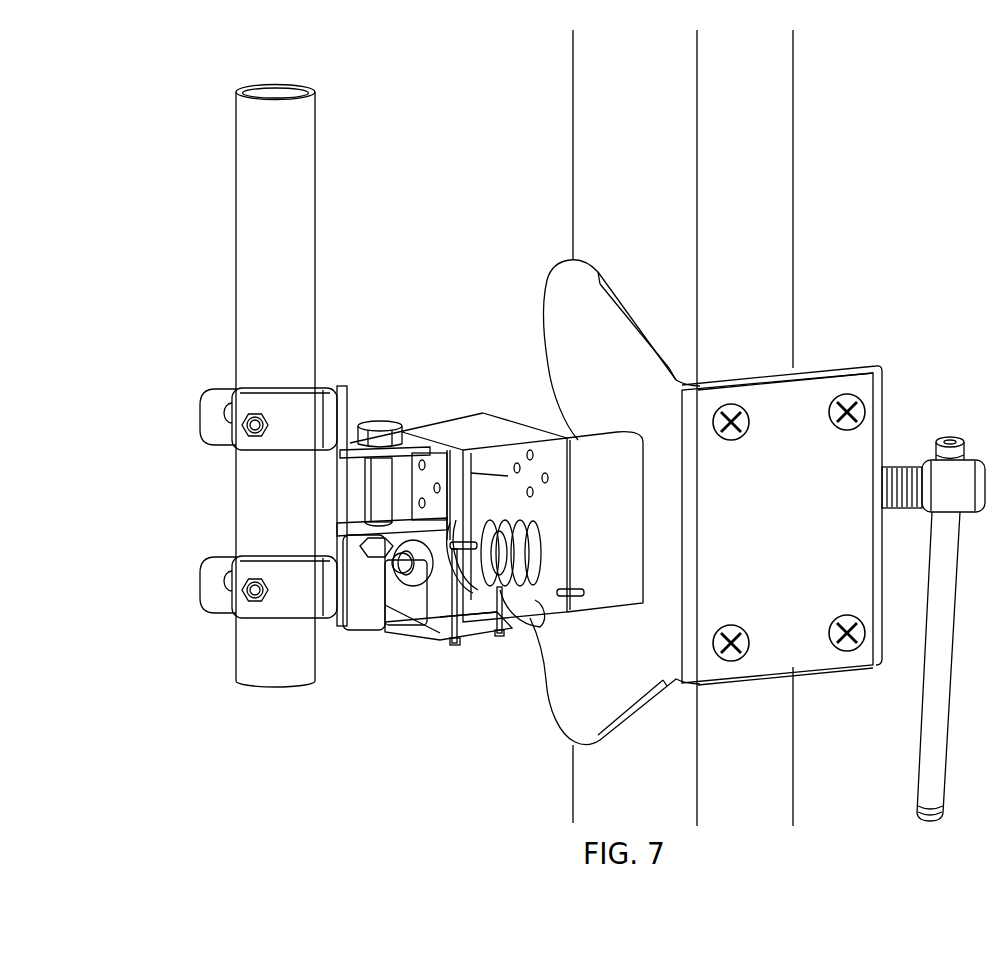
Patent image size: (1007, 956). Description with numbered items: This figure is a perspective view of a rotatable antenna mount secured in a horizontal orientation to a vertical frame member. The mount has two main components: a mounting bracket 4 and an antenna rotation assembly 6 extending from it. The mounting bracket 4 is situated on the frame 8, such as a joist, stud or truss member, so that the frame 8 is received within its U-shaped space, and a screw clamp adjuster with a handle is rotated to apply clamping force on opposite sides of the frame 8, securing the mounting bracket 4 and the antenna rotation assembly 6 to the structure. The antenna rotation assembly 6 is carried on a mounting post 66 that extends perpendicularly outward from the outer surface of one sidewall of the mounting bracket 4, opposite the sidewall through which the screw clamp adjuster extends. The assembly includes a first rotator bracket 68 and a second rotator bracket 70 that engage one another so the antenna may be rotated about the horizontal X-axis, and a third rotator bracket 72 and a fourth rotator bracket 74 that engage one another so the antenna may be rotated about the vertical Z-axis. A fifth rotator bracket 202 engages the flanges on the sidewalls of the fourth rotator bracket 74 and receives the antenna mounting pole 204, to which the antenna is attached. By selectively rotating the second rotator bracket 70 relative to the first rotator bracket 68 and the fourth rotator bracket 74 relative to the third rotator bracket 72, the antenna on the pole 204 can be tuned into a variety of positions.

The mounting bracket 4 is at (822, 710).
The antenna rotation assembly 6 is at (458, 672).
The frame 8 is at (778, 188).
The mounting post 66 is at (597, 478).
The first rotator bracket 68 is at (528, 608).
The second rotator bracket 70 is at (483, 430).
The third rotator bracket 72 is at (438, 470).
The fourth rotator bracket 74 is at (406, 470).
The fifth rotator bracket 202 is at (330, 385).
The antenna mounting pole 204 is at (236, 200).